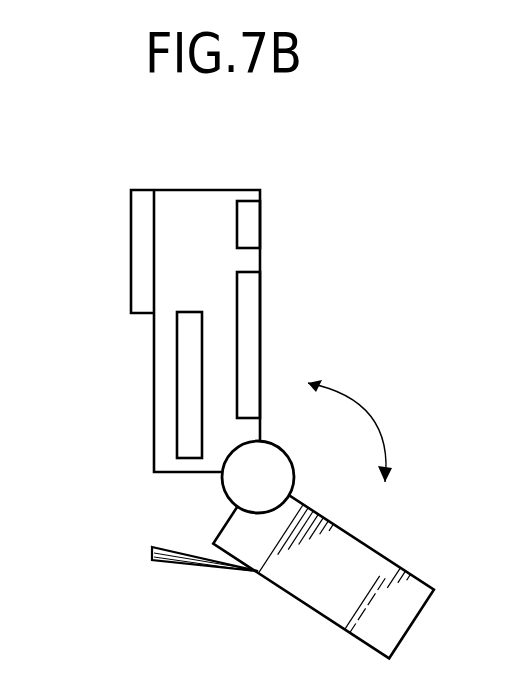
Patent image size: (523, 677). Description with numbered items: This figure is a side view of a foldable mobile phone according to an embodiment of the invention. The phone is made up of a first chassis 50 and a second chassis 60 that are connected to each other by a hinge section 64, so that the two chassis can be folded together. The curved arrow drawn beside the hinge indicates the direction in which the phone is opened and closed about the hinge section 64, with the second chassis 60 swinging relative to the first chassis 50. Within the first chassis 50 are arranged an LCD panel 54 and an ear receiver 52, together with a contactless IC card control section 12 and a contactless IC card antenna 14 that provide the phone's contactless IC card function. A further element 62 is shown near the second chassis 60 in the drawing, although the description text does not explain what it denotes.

The first chassis 50 is at (201, 197).
The ear receiver 52 is at (252, 233).
The LCD panel 54 is at (252, 337).
The contactless IC card control section 12 is at (178, 367).
The contactless IC card antenna 14 is at (140, 250).
The second chassis 60 is at (367, 558).
The projecting element 62 is at (202, 562).
The hinge section 64 is at (277, 463).